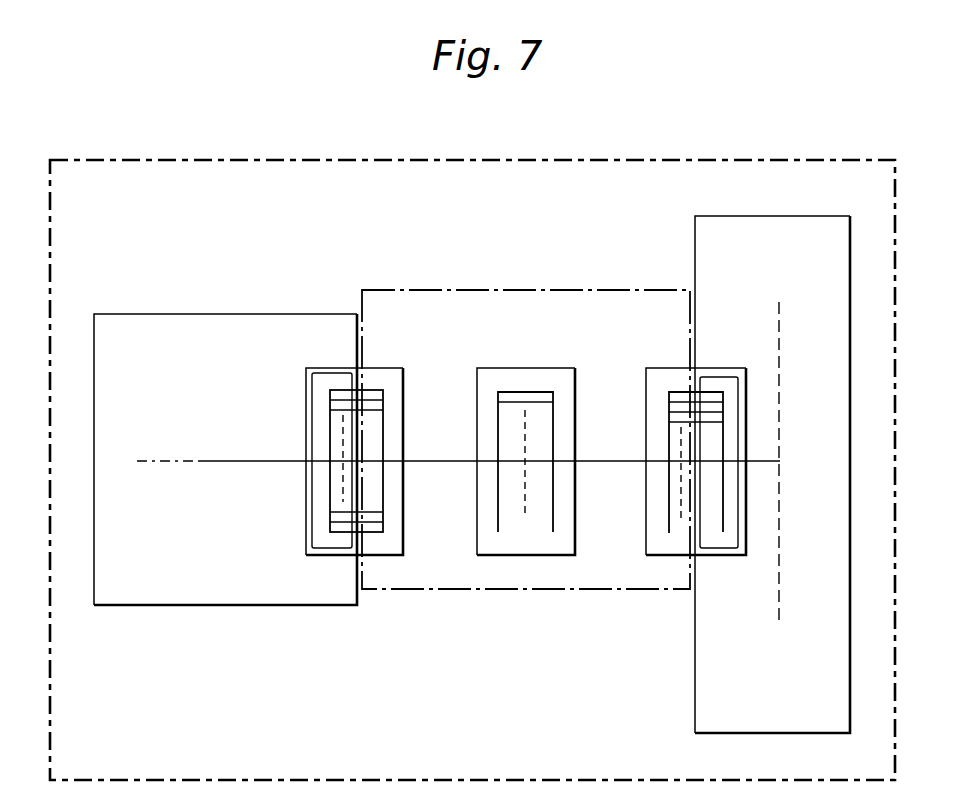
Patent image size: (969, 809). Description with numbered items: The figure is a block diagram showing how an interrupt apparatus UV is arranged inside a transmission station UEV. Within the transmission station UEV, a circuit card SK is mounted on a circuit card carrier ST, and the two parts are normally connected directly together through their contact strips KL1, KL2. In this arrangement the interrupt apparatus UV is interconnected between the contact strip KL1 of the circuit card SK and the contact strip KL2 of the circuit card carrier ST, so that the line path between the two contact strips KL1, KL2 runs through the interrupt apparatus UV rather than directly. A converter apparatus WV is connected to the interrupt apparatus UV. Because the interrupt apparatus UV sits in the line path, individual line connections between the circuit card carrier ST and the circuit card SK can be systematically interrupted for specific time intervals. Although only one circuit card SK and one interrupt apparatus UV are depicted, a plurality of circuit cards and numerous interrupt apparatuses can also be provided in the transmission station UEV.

The transmission station UEV is at (623, 158).
The circuit card SK is at (180, 329).
The interrupt apparatus UV is at (562, 305).
The contact strip KL1 is at (327, 385).
The contact strip KL2 is at (722, 386).
The converter apparatus WV is at (525, 555).
The circuit card carrier ST is at (712, 683).